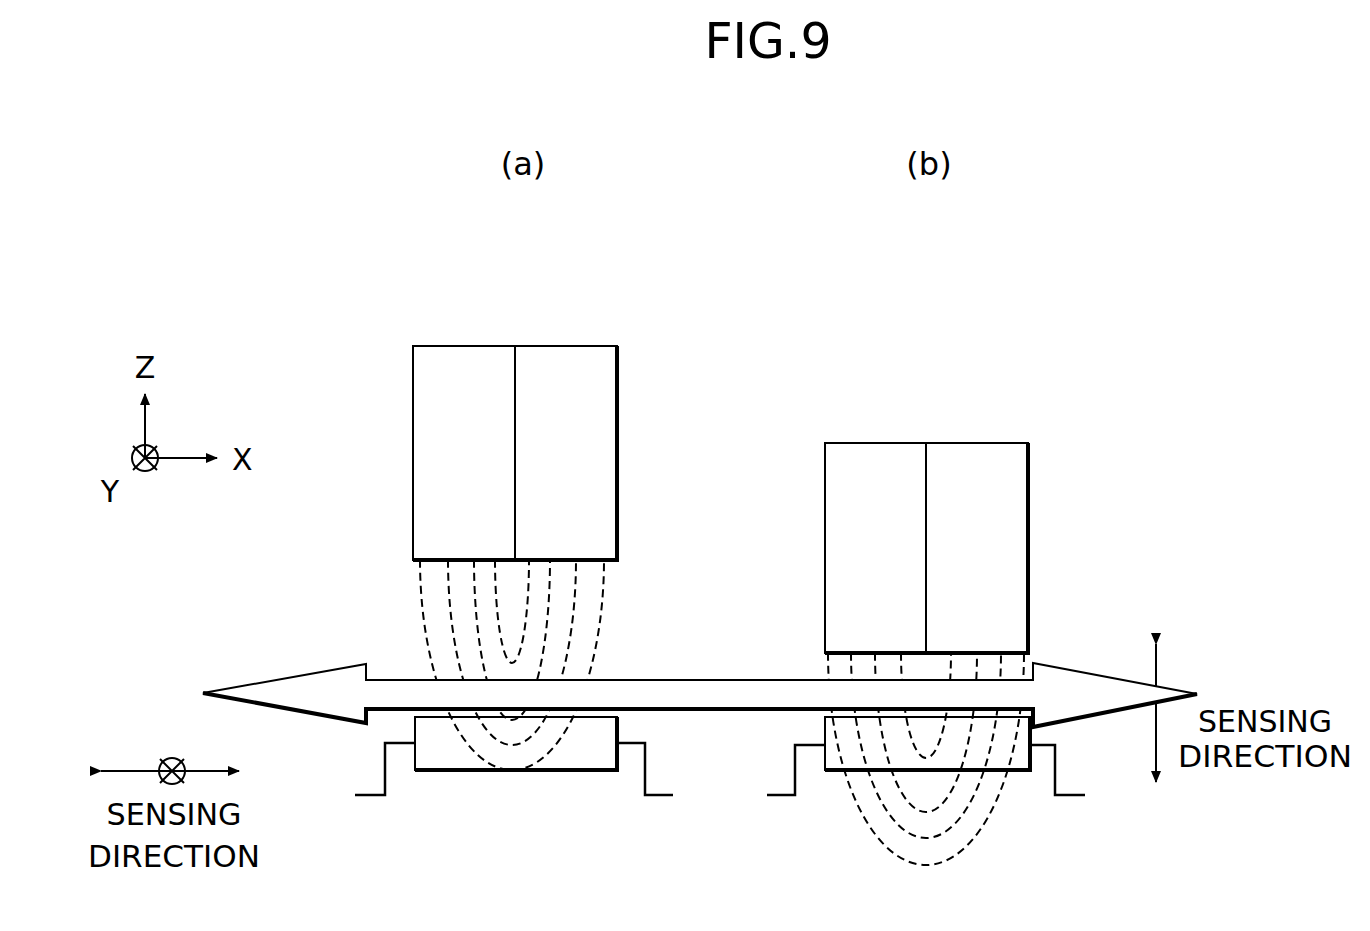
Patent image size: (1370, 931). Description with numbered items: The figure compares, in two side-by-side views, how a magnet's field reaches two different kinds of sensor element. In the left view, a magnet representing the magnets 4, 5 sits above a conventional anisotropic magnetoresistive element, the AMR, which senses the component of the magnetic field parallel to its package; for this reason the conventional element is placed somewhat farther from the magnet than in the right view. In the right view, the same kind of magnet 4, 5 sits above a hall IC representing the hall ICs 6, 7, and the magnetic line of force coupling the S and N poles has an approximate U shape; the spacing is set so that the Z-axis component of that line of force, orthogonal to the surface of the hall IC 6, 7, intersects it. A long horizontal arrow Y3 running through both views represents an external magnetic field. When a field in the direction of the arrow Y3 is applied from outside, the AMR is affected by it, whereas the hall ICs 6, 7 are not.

The magnet 4 is at (519, 399).
The magnet 5 is at (579, 344).
The hall IC 6 is at (926, 812).
The hall IC 7 is at (1012, 757).
The arrow Y3 is at (755, 678).
The anisotropic magnetoresistive element AMR is at (592, 760).